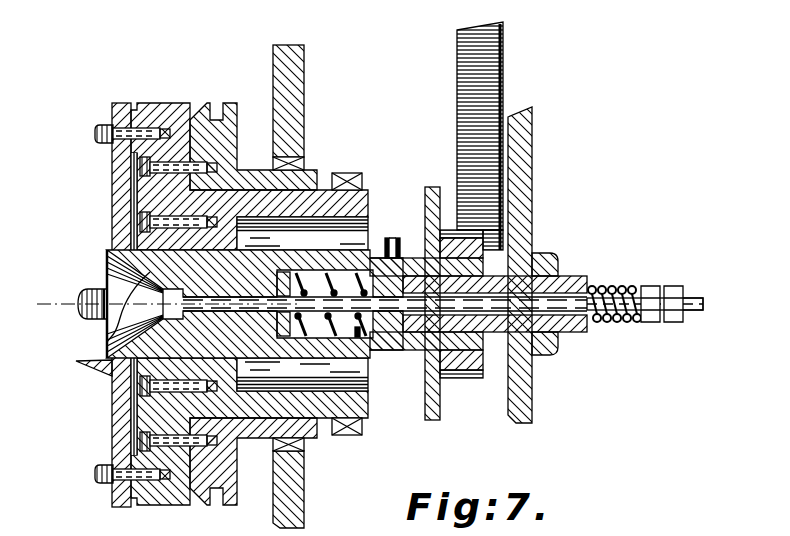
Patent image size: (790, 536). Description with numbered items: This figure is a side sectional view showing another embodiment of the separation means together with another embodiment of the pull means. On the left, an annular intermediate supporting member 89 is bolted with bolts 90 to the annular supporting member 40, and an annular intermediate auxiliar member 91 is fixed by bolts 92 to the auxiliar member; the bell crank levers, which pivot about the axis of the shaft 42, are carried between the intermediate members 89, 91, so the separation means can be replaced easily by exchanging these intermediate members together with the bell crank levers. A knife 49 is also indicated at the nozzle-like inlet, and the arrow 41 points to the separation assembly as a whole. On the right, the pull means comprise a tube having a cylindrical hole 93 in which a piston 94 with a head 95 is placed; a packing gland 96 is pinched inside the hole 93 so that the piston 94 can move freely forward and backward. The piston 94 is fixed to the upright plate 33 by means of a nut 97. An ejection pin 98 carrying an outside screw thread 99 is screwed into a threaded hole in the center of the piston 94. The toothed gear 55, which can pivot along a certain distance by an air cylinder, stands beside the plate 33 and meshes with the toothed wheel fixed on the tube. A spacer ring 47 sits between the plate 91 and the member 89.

The upright plate 33 is at (517, 142).
The annular supporting member 40 is at (236, 135).
The nozzle assembly 41 is at (84, 207).
The shaft 42 is at (104, 126).
The spacer ring 47 is at (125, 213).
The knives 49 is at (87, 321).
The toothed wheel or gear 55 is at (462, 74).
The annular intermediate supporting member 89 is at (163, 112).
The bolts 90 is at (130, 171).
The annular intermediate auxiliar member 91 is at (110, 202).
The bolts 92 is at (135, 232).
The cylindrical hole 93 is at (323, 252).
The piston 94 is at (515, 253).
The head 95 is at (383, 250).
The packing gland 96 is at (447, 230).
The nut 97 is at (558, 343).
The ejection pin 98 is at (612, 297).
The screw thread 99 is at (500, 330).